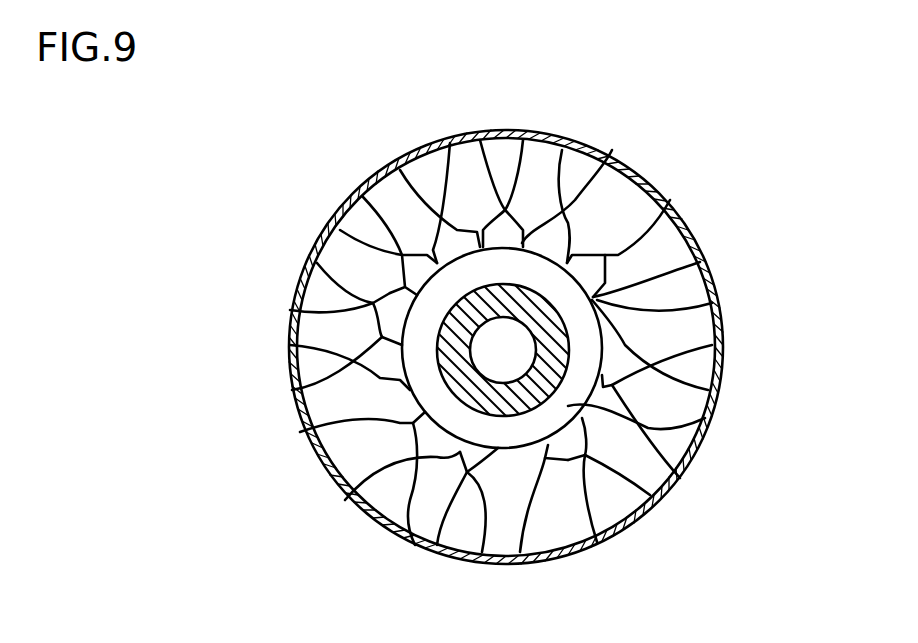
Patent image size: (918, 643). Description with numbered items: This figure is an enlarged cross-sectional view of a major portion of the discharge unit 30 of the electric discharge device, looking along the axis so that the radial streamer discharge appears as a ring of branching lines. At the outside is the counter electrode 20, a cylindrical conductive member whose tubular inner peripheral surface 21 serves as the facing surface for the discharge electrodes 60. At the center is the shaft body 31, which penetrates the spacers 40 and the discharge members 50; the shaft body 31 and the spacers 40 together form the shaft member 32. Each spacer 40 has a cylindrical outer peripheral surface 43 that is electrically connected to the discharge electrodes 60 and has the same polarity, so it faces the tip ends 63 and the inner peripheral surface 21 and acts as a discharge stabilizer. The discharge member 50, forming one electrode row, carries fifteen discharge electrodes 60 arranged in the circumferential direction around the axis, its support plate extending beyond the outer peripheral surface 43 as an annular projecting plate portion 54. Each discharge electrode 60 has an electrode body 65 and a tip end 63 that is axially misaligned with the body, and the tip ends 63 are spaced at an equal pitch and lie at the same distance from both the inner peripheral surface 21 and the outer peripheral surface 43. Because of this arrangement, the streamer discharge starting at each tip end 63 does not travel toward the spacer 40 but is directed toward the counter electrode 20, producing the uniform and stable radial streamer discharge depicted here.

The counter electrode 20 is at (290, 347).
The inner peripheral surface 21 is at (296, 333).
The discharge unit 30 is at (335, 182).
The shaft body 31 is at (513, 355).
The shaft member 32 is at (472, 407).
The spacer 40 is at (593, 297).
The outer peripheral surface 43 is at (503, 416).
The discharge member 50 is at (375, 392).
The annular projecting plate portion 54 is at (590, 453).
The discharge electrode 60 is at (593, 255).
The tip end 63 is at (588, 458).
The electrode body 65 is at (590, 457).